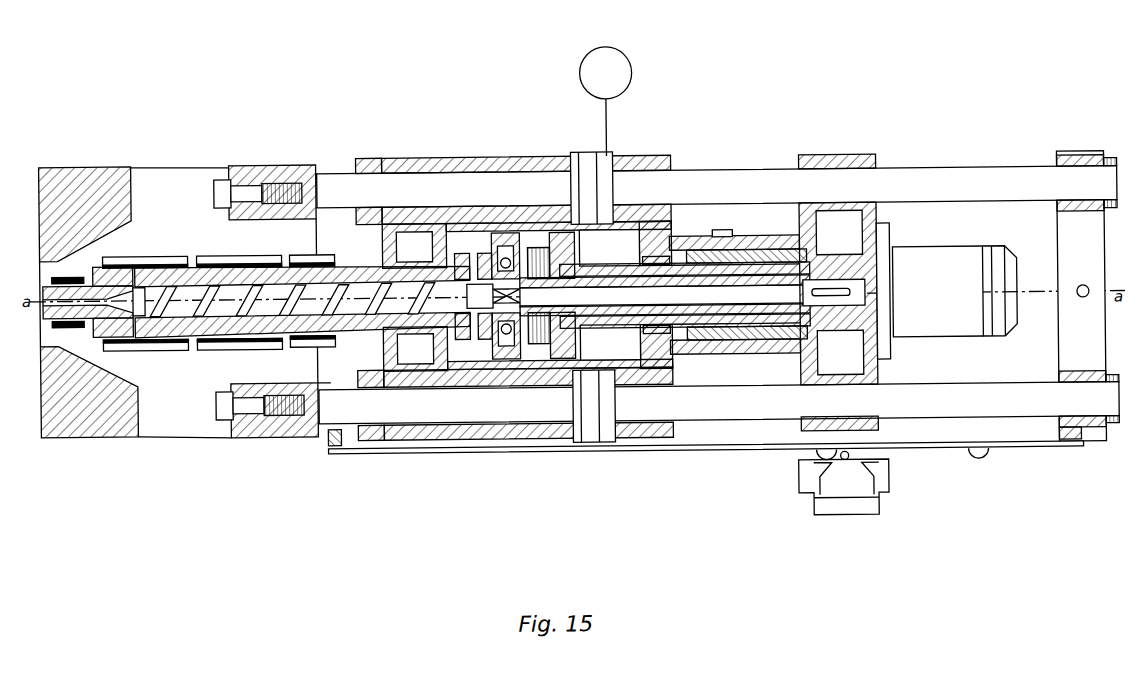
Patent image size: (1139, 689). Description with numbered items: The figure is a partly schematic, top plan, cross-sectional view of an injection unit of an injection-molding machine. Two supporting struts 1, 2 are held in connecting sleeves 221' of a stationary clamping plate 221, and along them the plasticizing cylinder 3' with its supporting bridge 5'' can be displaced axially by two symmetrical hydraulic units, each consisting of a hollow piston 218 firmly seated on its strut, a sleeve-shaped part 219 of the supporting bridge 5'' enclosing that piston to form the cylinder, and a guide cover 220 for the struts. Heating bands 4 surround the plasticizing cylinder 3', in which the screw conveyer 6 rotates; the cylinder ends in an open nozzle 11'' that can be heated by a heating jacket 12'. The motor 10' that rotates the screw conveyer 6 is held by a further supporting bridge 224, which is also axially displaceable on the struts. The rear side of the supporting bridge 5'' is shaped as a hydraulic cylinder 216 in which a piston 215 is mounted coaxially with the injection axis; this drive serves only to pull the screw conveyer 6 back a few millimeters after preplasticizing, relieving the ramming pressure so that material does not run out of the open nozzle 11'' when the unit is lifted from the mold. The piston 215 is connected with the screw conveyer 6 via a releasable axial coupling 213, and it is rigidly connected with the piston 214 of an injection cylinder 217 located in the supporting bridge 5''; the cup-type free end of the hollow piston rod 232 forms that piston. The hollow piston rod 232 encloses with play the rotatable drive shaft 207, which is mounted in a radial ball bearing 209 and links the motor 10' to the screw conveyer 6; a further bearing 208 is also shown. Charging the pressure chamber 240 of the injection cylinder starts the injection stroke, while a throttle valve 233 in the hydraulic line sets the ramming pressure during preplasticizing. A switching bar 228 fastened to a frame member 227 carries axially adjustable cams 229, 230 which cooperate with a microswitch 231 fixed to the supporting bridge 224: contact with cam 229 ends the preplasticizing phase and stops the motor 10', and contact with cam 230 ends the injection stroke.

The supporting strut 1 is at (330, 180).
The supporting strut 2 is at (314, 430).
The plasticizing cylinder 3' is at (118, 398).
The heating bands 4 is at (322, 252).
The supporting bridge 5'' is at (303, 383).
The screw conveyer 6 is at (287, 308).
The motor 10' is at (954, 218).
The open nozzle 11'' is at (87, 216).
The heating jacket 12' is at (66, 220).
The drive shaft 207 is at (539, 238).
The bearing 208 is at (568, 238).
The radial ball bearing 209 is at (508, 236).
The releasable axial coupling 213 is at (464, 252).
The piston 214 is at (560, 357).
The piston 215 is at (744, 343).
The hydraulic cylinder 216 is at (714, 344).
The cylinder 217 is at (648, 156).
The hollow piston 218 is at (613, 156).
The sleeve-shaped part 219 is at (489, 156).
The guide cover 220 is at (360, 160).
The stationary clamping plate 221 is at (93, 275).
The connecting sleeve 221' is at (266, 343).
The supporting bridge 224 is at (815, 157).
The frame member 227 is at (1093, 232).
The switching bar 228 is at (930, 452).
The cam 229 is at (975, 461).
The cam 230 is at (823, 464).
The microswitch 231 is at (858, 492).
The hollow piston rod 232 is at (607, 438).
The throttle valve 233 is at (582, 75).
The pressure chamber 240 is at (608, 247).